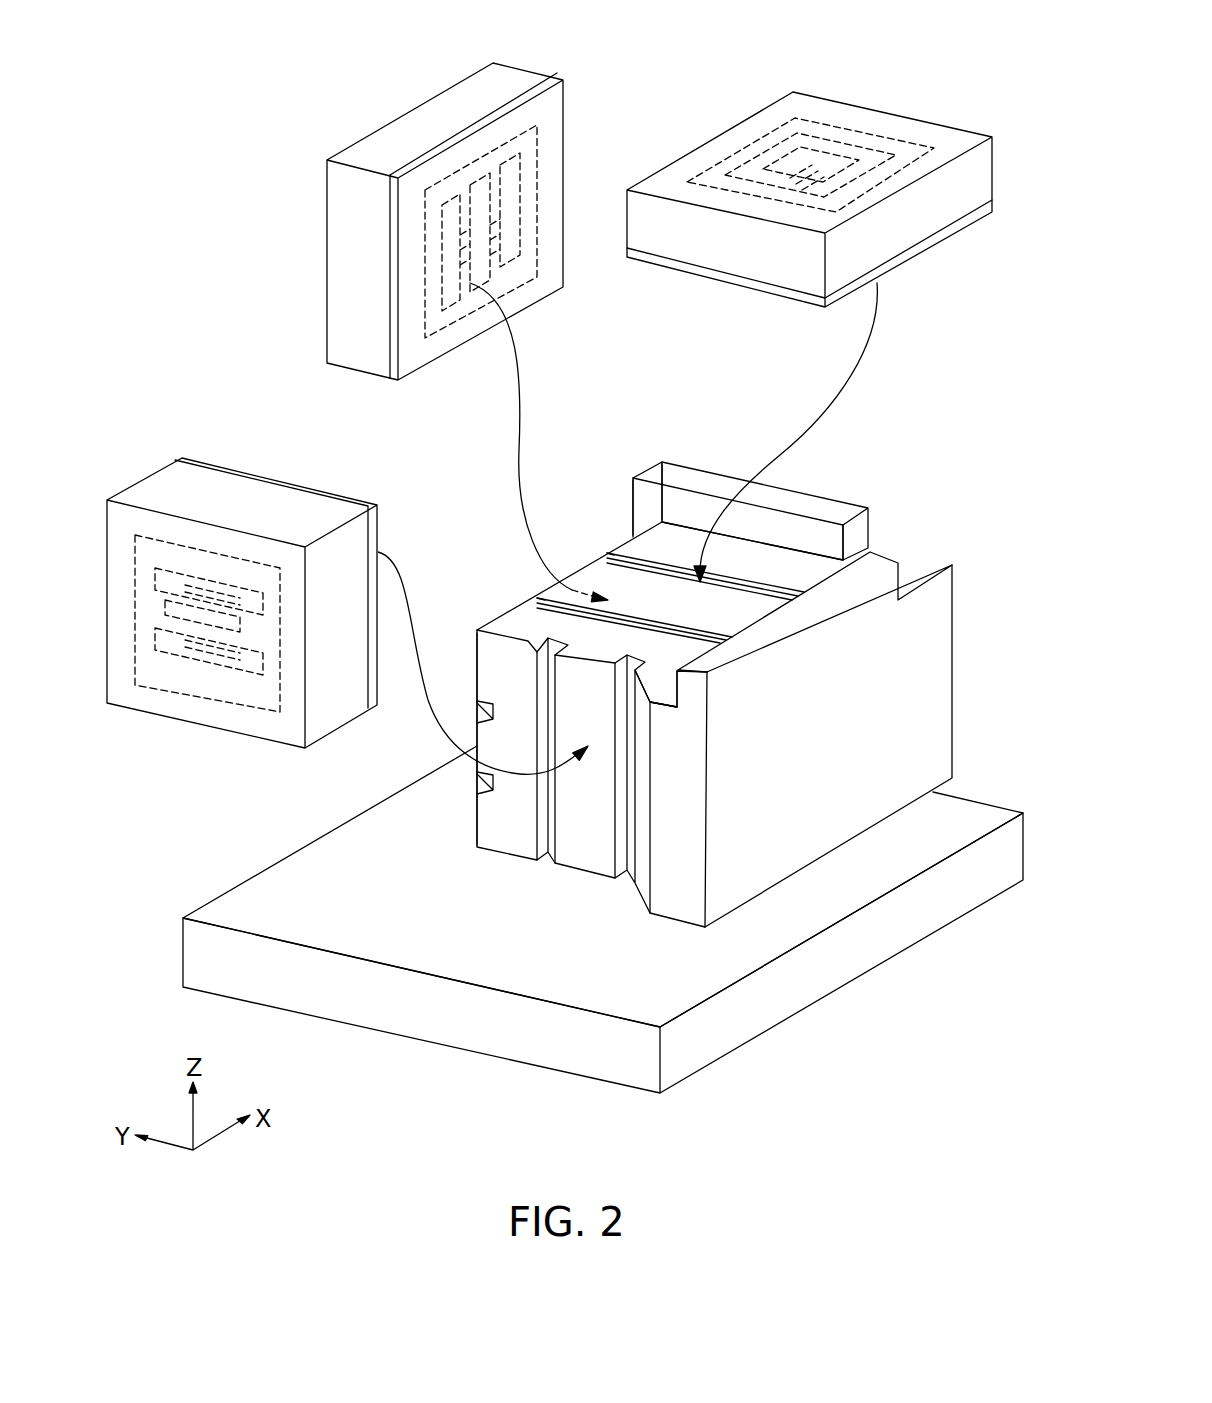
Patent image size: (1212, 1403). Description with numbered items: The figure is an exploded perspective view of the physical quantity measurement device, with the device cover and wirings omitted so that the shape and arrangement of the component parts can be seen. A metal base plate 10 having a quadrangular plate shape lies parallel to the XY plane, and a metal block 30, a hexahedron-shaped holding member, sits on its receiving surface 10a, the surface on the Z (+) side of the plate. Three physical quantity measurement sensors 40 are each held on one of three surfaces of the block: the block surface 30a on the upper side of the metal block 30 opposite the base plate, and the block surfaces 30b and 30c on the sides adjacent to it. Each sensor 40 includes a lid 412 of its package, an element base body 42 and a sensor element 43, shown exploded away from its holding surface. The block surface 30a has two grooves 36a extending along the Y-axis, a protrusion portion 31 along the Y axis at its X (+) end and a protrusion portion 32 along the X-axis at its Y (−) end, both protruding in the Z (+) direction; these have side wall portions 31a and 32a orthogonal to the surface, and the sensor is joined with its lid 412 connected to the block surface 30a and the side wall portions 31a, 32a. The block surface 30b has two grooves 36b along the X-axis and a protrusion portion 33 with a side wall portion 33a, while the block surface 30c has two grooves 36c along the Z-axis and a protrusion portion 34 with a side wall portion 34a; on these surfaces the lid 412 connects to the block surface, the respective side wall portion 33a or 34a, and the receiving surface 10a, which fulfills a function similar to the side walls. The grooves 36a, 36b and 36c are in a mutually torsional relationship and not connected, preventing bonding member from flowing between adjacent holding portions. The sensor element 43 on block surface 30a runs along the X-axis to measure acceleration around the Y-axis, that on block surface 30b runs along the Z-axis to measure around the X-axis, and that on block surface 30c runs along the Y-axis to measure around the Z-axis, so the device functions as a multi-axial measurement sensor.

The metal base plate 10 is at (603, 919).
The receiving surface 10a is at (843, 897).
The metal block 30 is at (679, 692).
The block surface 30a is at (663, 590).
The block surface 30b is at (422, 717).
The block surface 30c is at (587, 840).
The protrusion portion 31 is at (797, 497).
The side wall portion 31a is at (818, 548).
The protrusion portion 32 is at (641, 576).
The side wall portion 32a is at (658, 705).
The protrusion portion 33 is at (605, 486).
The side wall portion 33a is at (605, 499).
The protrusion portion 34 is at (633, 827).
The side wall portion 34a is at (637, 672).
The grooves 36a is at (598, 550).
The grooves 36b is at (463, 773).
The grooves 36c is at (614, 890).
The physical quantity measurement sensor 40 is at (555, 402).
The lid 412 is at (265, 480).
The element base body 42 is at (534, 411).
The sensor element 43 is at (200, 628).